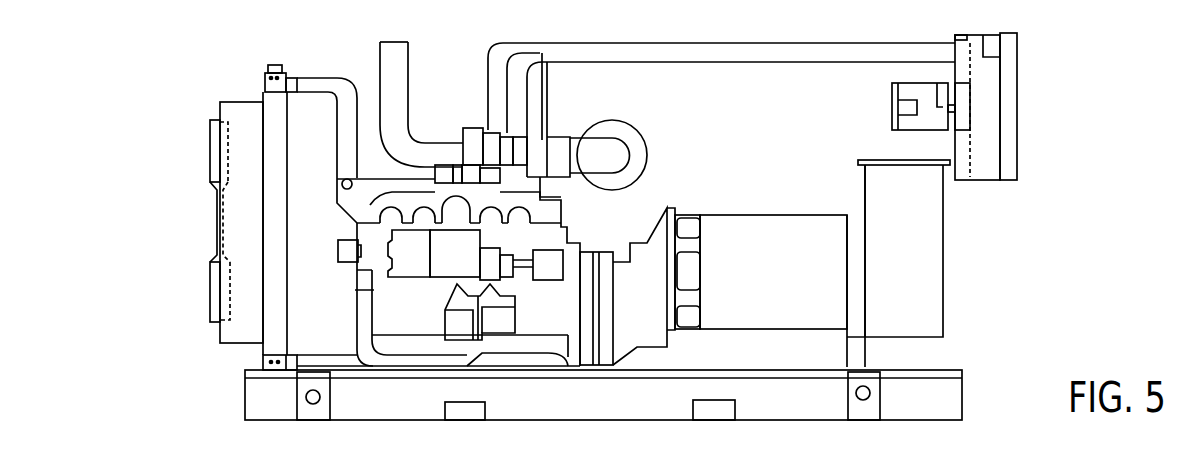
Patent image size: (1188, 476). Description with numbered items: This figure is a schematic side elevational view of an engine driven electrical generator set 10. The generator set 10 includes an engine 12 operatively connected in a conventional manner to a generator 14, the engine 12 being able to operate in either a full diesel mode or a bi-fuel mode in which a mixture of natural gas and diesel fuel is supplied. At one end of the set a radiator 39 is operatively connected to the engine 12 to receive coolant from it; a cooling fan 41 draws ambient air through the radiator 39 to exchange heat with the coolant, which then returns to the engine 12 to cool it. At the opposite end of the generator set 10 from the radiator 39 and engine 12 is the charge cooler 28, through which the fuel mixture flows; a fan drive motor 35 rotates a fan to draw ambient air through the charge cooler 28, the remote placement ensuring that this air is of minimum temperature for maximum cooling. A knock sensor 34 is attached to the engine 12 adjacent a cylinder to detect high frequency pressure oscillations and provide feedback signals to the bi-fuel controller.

The generator set 10 is at (985, 307).
The engine 12 is at (565, 222).
The generator 14 is at (760, 215).
The charge cooler 28 is at (1008, 87).
The knock sensor 34 is at (966, 183).
The fan drive motor 35 is at (919, 75).
The radiator 39 is at (246, 358).
The cooling fan 41 is at (210, 181).